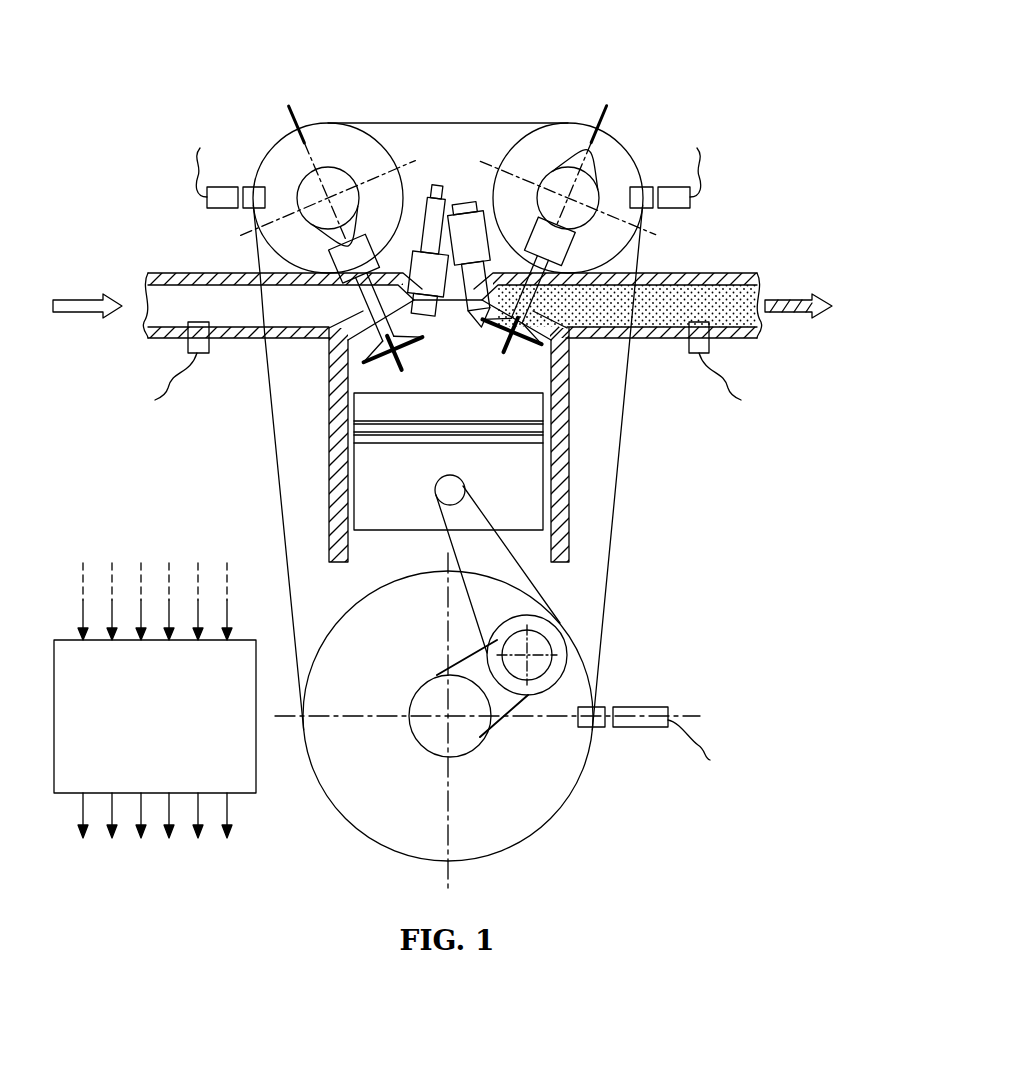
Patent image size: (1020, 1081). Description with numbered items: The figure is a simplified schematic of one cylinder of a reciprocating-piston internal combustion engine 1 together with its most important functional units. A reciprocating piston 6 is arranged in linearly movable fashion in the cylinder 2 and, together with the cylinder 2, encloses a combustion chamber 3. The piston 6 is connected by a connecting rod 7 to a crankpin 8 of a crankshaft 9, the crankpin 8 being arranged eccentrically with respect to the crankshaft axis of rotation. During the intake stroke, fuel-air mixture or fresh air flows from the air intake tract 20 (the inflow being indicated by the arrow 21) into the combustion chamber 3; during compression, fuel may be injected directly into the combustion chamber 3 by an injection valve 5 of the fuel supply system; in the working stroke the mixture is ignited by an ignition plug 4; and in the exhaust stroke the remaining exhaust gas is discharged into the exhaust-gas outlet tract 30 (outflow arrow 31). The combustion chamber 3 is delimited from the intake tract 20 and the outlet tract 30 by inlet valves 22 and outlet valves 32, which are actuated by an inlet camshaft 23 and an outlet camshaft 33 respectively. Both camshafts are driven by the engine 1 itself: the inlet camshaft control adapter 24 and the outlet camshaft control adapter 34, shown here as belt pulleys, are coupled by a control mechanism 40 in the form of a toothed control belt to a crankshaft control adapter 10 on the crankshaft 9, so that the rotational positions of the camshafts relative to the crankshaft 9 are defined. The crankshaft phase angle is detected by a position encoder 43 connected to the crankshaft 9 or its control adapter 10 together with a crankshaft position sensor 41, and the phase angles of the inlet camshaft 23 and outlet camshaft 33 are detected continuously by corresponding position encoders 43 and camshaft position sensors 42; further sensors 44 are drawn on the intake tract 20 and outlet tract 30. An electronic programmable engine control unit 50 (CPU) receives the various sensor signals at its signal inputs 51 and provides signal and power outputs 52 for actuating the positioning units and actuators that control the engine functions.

The internal combustion engine 1 is at (529, 56).
The cylinder 2 is at (335, 434).
The combustion chamber 3 is at (462, 377).
The ignition plug 4 is at (440, 322).
The injection valve 5 is at (472, 200).
The reciprocating piston 6 is at (534, 404).
The connecting rod 7 is at (479, 500).
The crankpin 8 is at (520, 627).
The crankshaft 9 is at (417, 745).
The crankshaft control adapter 10 is at (350, 823).
The air intake tract 20 is at (183, 288).
The intake air flow 21 is at (80, 314).
The inlet valve 22 is at (368, 378).
The inlet camshaft 23 is at (312, 170).
The inlet camshaft control adapter 24 is at (323, 123).
The exhaust-gas outlet tract 30 is at (729, 288).
The exhaust gas flow 31 is at (779, 314).
The outlet valve 32 is at (530, 358).
The outlet camshaft 33 is at (600, 162).
The outlet camshaft control adapter 34 is at (573, 130).
The control mechanism 40 is at (385, 123).
The crankshaft position sensor 41 is at (648, 728).
The camshaft position sensor 42 is at (221, 211).
The position encoder 43 is at (251, 186).
The pipe sensor 44 is at (205, 355).
The engine control unit 50 is at (143, 746).
The input signals 51 is at (90, 556).
The output signals 52 is at (88, 853).